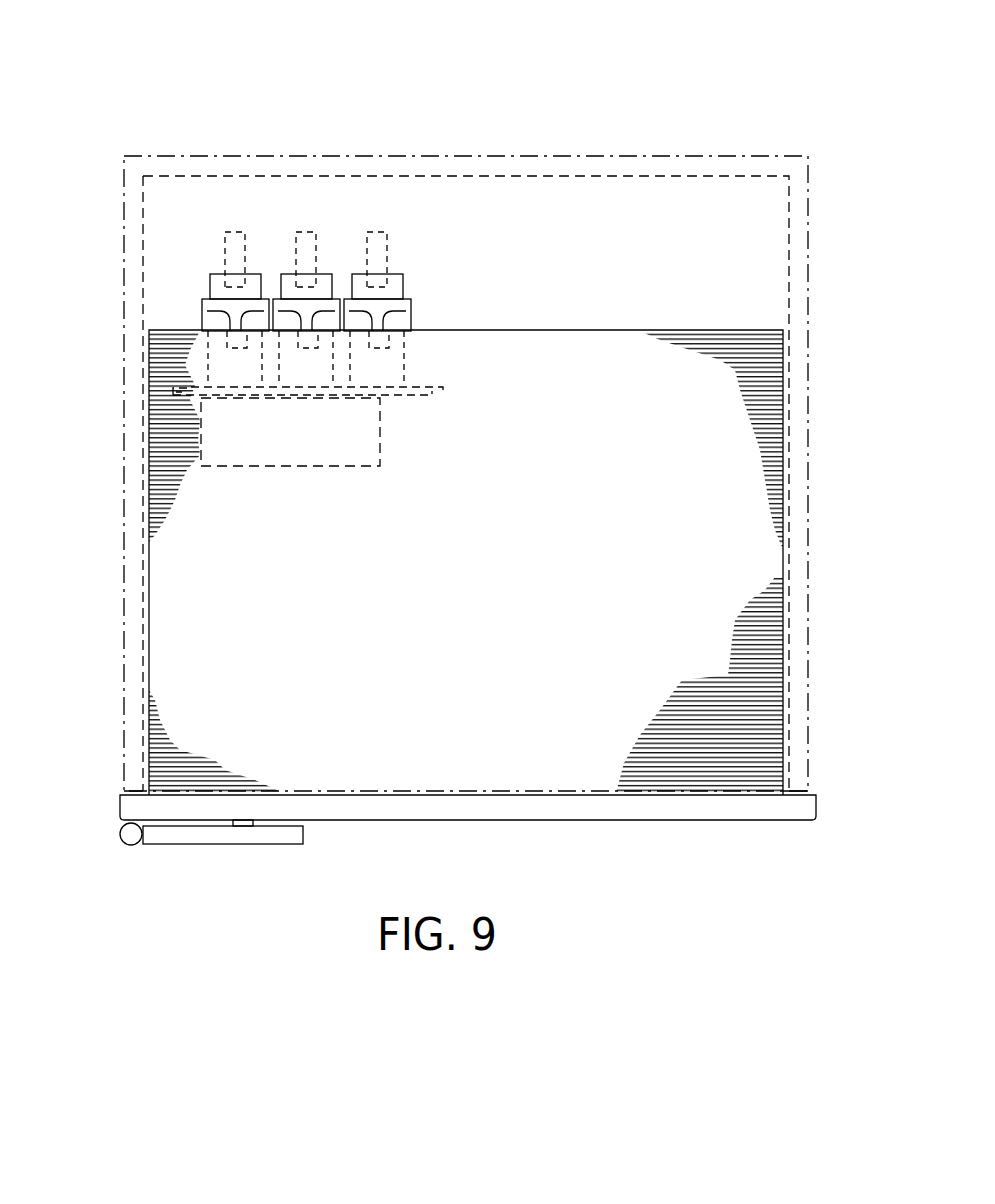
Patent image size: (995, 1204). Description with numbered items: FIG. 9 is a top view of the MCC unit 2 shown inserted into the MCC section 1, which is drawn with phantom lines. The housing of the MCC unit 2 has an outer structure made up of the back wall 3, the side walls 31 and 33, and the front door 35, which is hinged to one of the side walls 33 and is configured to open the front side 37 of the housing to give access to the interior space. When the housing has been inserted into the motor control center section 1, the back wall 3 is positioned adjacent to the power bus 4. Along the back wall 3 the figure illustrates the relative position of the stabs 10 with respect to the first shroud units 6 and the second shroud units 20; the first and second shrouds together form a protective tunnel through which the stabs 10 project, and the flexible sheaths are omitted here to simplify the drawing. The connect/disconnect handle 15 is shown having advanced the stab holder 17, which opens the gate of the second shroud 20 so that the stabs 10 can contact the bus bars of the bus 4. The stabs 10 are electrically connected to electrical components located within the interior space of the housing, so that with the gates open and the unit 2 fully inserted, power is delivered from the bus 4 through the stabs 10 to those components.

The MCC section 1 is at (670, 156).
The MCC unit 2 is at (128, 528).
The back wall 3 is at (650, 300).
The bus 4 is at (388, 253).
The first shroud unit 6 is at (210, 275).
The stab 10 is at (215, 367).
The connect/disconnect handle 15 is at (247, 845).
The stab holder 17 is at (227, 432).
The second shroud unit 20 is at (201, 309).
The side wall 31 is at (781, 683).
The side wall 33 is at (150, 668).
The front door 35 is at (553, 820).
The front side 37 is at (702, 900).